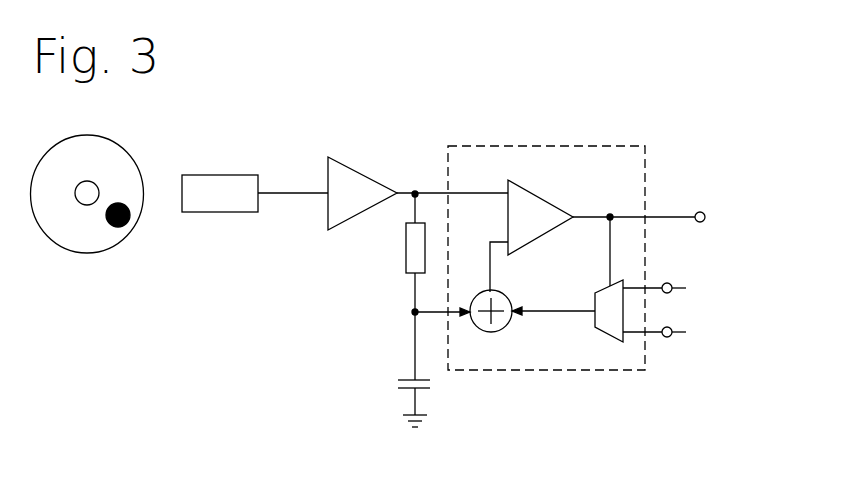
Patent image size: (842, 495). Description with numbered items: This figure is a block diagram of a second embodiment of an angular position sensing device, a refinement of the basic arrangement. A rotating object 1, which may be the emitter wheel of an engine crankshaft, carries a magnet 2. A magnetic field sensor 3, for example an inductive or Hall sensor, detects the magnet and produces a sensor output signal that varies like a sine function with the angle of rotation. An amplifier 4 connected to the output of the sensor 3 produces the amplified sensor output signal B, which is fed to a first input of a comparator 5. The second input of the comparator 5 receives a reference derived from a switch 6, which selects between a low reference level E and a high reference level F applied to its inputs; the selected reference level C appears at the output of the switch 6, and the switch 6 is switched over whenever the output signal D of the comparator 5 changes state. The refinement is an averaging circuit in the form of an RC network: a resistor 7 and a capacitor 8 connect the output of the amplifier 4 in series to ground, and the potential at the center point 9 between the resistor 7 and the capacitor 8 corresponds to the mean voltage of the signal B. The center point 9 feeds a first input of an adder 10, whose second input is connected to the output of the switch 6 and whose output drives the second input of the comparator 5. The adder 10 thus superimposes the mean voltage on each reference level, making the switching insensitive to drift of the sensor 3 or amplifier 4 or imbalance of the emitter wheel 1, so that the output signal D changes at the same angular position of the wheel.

The rotating object 1 is at (63, 236).
The magnet 2 is at (127, 224).
The magnetic field sensor 3 is at (223, 187).
The amplifier 4 is at (357, 192).
The comparator 5 is at (537, 213).
The switch 6 is at (608, 308).
The resistor 7 is at (415, 247).
The capacitor 8 is at (408, 377).
The center point 9 is at (412, 313).
The adder 10 is at (500, 328).
The amplified sensor output signal B is at (405, 192).
The reference level at the output of the switch C is at (563, 312).
The output signal of the comparator D is at (687, 210).
The low reference level E is at (664, 286).
The high reference level F is at (664, 329).